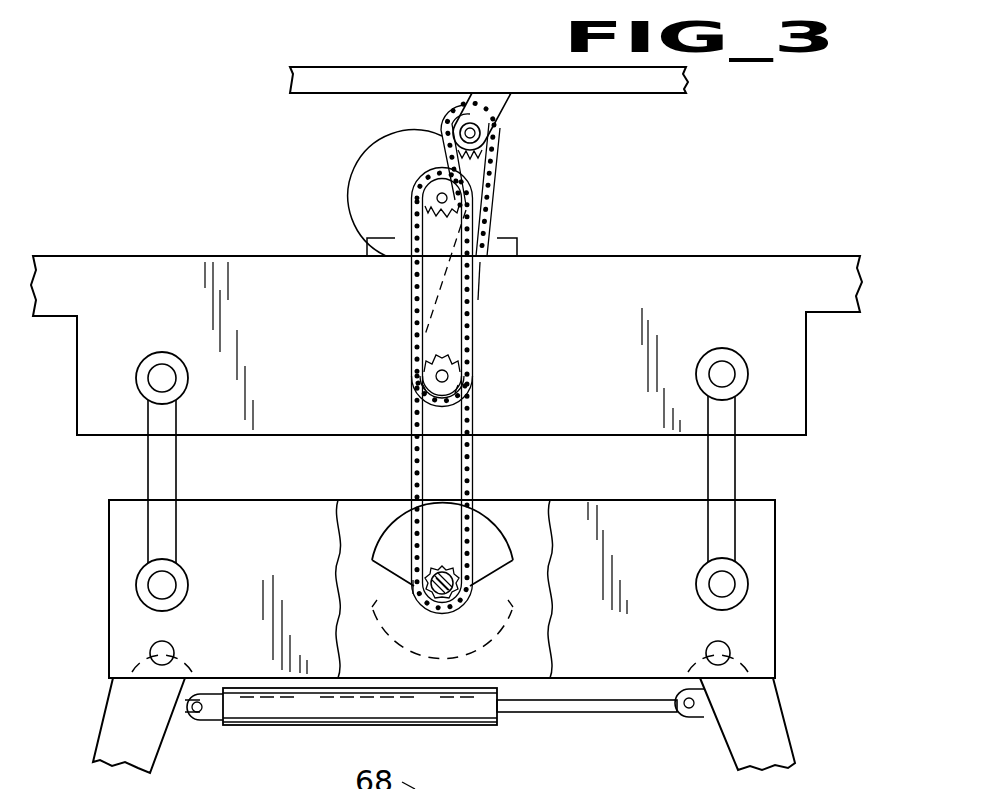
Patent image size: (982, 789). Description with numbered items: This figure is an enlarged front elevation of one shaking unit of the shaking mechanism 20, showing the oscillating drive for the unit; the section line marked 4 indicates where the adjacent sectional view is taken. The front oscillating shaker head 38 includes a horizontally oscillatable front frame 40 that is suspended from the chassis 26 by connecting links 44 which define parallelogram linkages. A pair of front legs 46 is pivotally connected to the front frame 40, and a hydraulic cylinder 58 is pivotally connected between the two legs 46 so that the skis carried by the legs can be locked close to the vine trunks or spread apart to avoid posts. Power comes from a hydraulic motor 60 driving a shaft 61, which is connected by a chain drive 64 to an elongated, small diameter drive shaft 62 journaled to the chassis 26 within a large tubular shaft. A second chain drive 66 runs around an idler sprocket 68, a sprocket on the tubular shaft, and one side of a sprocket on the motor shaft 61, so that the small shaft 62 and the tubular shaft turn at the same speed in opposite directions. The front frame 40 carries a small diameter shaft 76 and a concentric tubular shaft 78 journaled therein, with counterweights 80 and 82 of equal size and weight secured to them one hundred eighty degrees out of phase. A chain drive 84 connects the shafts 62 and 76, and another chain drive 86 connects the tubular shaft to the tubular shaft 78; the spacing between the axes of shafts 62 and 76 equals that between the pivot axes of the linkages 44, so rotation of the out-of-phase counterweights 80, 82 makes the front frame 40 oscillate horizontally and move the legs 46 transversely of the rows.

The shaking mechanism 20 is at (700, 215).
The chassis 26 is at (280, 81).
The section line 4 is at (353, 160).
The front oscillating shaker head 38 is at (800, 510).
The front frame 40 is at (349, 502).
The connecting links 44 is at (147, 470).
The front legs 46 is at (108, 706).
The hydraulic cylinder 58 is at (497, 722).
The hydraulic motor 60 is at (384, 183).
The shaft 61 is at (437, 199).
The drive shaft 62 is at (449, 376).
The chain drive 64 is at (472, 284).
The second chain drive 66 is at (500, 189).
The idler sprocket 68 is at (498, 138).
The small diameter shaft 76 is at (480, 587).
The tubular shaft 78 is at (405, 587).
The counterweight 80 is at (500, 627).
The counterweight 82 is at (482, 522).
The chain drive 84 is at (472, 405).
The chain drive 86 is at (472, 458).